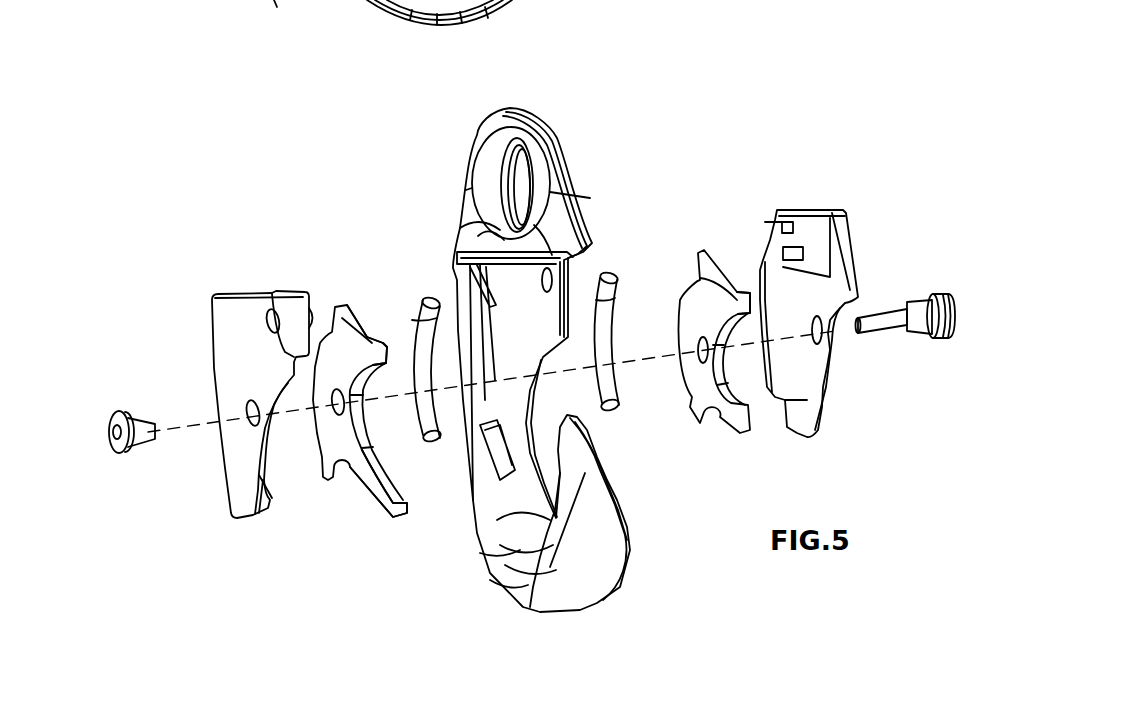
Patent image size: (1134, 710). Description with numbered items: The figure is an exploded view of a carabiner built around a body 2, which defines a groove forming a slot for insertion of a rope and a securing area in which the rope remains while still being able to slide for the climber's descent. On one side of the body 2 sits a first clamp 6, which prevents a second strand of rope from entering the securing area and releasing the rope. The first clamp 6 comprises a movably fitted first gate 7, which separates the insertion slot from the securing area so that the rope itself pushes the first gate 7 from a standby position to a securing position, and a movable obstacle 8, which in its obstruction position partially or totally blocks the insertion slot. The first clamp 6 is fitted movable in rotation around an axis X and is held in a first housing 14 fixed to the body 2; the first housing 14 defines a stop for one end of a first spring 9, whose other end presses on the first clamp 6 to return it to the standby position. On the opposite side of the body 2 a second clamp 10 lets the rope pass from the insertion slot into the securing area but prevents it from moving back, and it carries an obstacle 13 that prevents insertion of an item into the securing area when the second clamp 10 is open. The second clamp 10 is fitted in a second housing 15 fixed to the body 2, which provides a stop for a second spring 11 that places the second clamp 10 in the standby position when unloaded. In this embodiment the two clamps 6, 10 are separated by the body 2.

The body 2 is at (533, 107).
The first clamp 6 is at (327, 500).
The first gate 7 is at (388, 517).
The movable obstacle 8 is at (373, 343).
The first spring 9 is at (431, 296).
The second clamp 10 is at (727, 452).
The second spring 11 is at (608, 275).
The obstacle 13 is at (738, 297).
The first housing 14 is at (258, 293).
The second housing 15 is at (808, 212).
The axis X is at (114, 413).